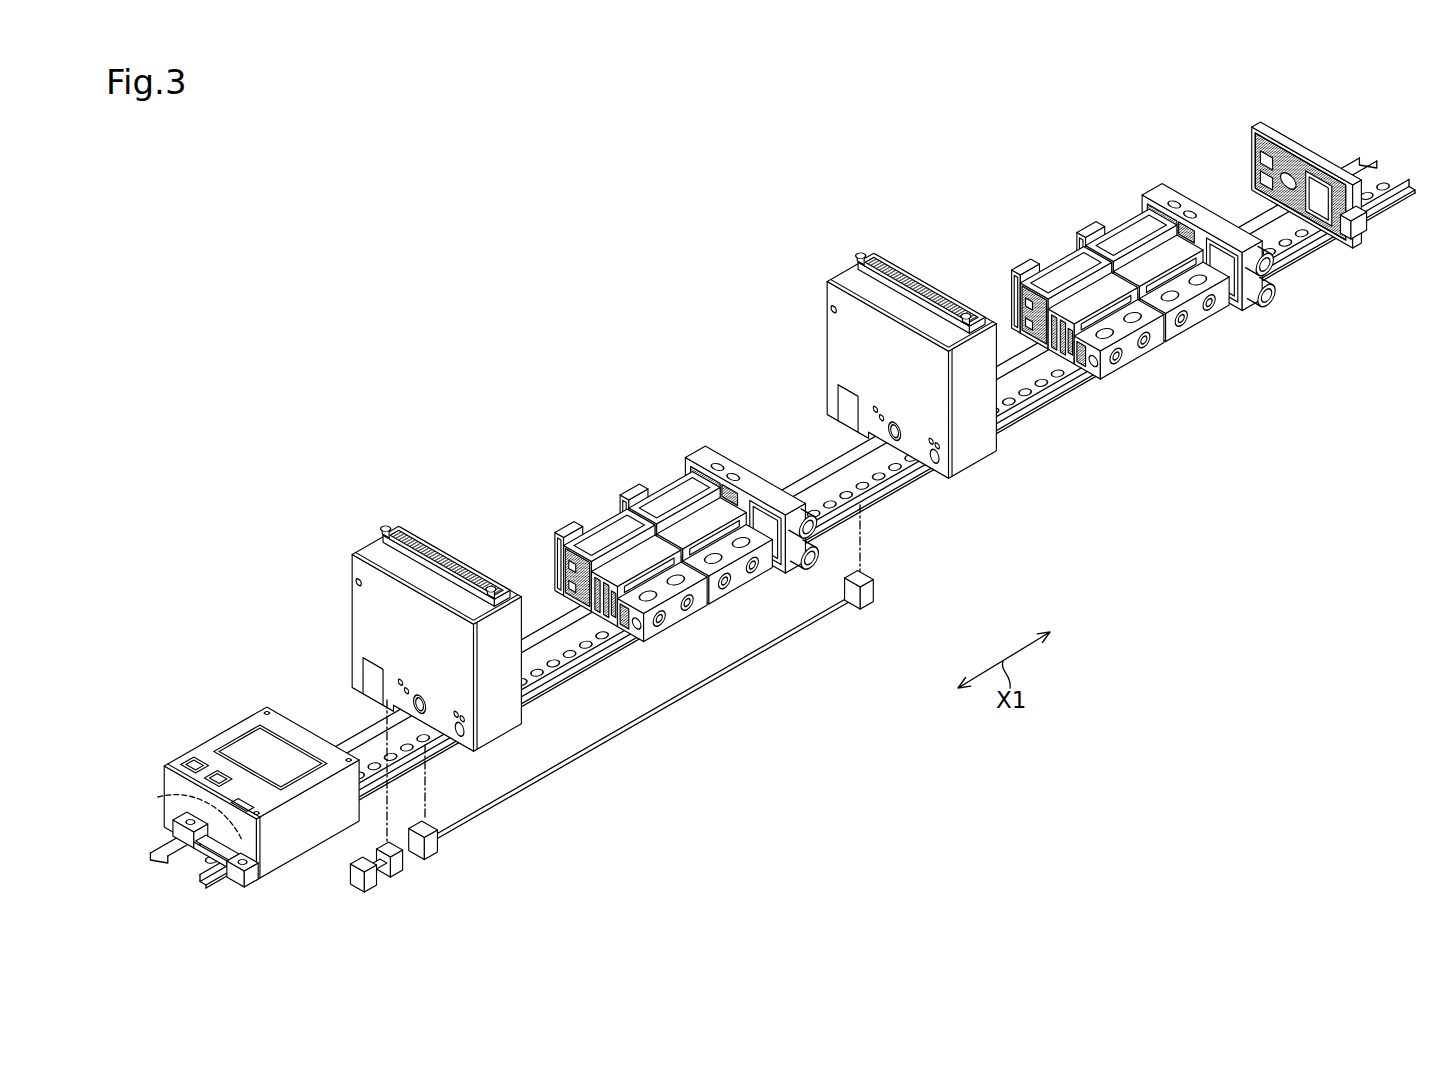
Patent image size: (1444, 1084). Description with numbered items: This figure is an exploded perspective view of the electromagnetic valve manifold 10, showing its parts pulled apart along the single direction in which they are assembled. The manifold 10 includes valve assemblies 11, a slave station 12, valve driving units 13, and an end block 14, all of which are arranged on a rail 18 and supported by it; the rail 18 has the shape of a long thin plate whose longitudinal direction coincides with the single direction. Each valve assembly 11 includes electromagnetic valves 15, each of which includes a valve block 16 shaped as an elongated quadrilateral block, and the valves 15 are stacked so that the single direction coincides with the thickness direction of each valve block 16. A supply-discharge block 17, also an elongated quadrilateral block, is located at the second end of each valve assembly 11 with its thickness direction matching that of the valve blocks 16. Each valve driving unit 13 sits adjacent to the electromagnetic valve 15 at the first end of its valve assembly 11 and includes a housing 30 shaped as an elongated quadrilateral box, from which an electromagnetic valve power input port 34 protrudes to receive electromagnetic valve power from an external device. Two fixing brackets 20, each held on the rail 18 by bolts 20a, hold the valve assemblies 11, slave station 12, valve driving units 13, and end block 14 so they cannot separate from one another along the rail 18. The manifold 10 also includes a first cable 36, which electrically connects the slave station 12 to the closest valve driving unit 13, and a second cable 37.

The electromagnetic valve manifold 10 is at (603, 334).
The valve assembly 11 is at (902, 378).
The slave station 12 is at (233, 767).
The valve driving unit 13 is at (671, 481).
The end block 14 is at (1260, 127).
The electromagnetic valve 15 is at (633, 495).
The valve block 16 is at (652, 506).
The supply-discharge block 17 is at (704, 452).
The rail 18 is at (1068, 396).
The fixing bracket 20 is at (242, 881).
The bolt 20a is at (165, 798).
The housing 30 is at (400, 531).
The electromagnetic valve power input port 34 is at (452, 558).
The first cable 36 is at (362, 884).
The second cable 37 is at (668, 710).